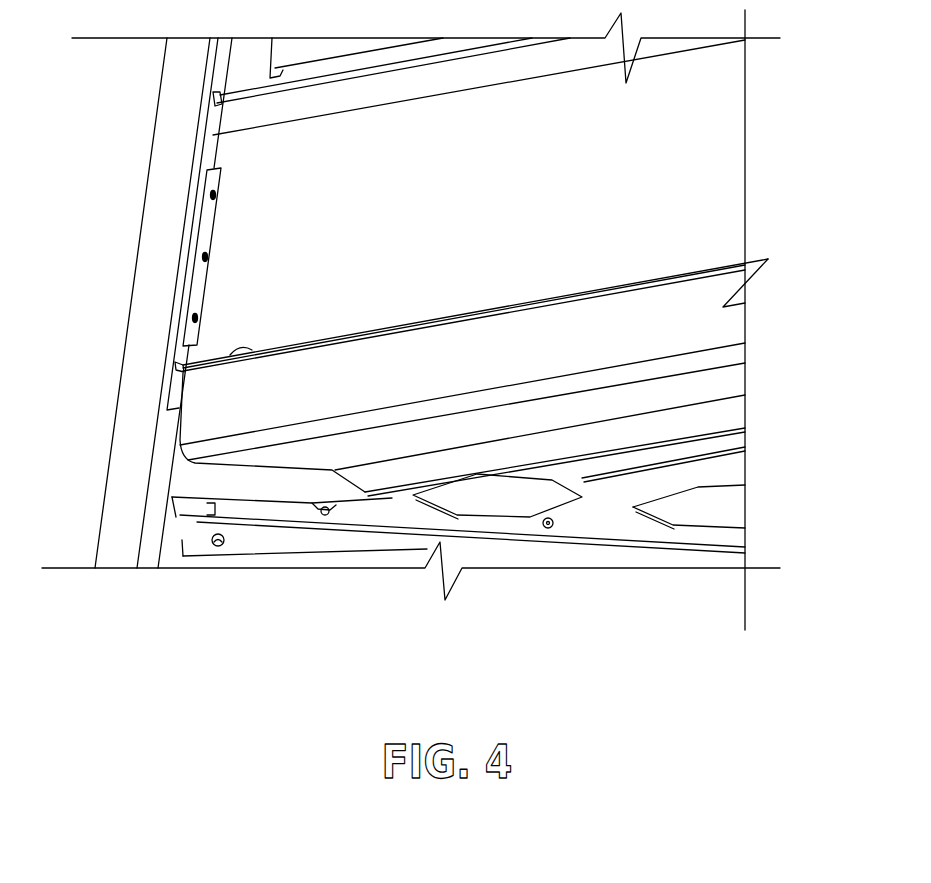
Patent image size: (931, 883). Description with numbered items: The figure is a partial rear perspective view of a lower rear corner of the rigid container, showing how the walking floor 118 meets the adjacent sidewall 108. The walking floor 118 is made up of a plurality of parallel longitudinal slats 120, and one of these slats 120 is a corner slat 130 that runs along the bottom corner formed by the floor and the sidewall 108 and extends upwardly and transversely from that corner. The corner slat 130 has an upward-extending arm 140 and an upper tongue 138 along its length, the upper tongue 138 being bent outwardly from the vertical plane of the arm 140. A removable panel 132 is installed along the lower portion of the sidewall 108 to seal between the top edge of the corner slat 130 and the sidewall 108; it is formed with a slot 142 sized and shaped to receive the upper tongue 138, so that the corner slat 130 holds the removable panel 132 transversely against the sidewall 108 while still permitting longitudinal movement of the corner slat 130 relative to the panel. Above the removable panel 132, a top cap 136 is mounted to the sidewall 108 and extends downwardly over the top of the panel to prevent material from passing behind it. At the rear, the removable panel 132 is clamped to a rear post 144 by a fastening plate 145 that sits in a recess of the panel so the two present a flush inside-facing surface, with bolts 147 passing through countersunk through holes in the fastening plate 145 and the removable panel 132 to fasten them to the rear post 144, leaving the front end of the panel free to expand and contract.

The sidewall 108 is at (187, 90).
The walking floor 118 is at (612, 479).
The longitudinal slats 120 is at (508, 497).
The corner slat 130 is at (263, 484).
The removable panel 132 is at (479, 116).
The top cap 136 is at (245, 120).
The upper tongue 138 is at (250, 352).
The upward-extending arm 140 is at (474, 375).
The slot 142 is at (385, 320).
The rear post 144 is at (150, 297).
The fastening plate 145 is at (207, 223).
The bolts 147 is at (197, 318).